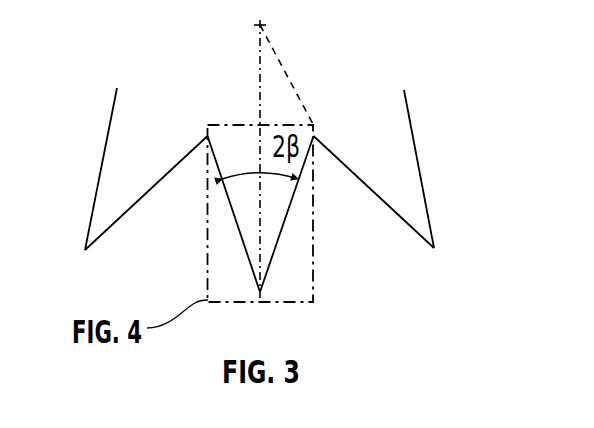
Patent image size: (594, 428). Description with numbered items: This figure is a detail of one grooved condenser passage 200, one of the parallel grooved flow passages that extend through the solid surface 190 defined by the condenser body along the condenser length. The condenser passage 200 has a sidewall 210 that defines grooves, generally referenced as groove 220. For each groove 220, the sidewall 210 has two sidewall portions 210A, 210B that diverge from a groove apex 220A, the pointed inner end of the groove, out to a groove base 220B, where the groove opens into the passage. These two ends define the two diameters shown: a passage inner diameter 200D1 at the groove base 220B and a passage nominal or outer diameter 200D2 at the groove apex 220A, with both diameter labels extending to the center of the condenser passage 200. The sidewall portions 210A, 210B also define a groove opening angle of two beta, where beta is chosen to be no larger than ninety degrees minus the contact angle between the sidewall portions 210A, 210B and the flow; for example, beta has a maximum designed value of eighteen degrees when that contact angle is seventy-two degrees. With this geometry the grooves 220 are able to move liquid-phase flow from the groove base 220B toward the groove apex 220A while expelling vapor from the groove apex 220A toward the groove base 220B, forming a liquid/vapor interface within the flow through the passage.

The solid surface 190 is at (68, 182).
The condenser passage 200 is at (193, 104).
The passage inner diameter 200D1 is at (288, 62).
The passage nominal diameter 200D2 is at (258, 58).
The sidewall 210 is at (469, 174).
The sidewall portion 210A is at (273, 253).
The sidewall portion 210B is at (243, 246).
The groove 220 is at (152, 182).
The groove apex 220A is at (436, 236).
The groove base 220B is at (407, 107).